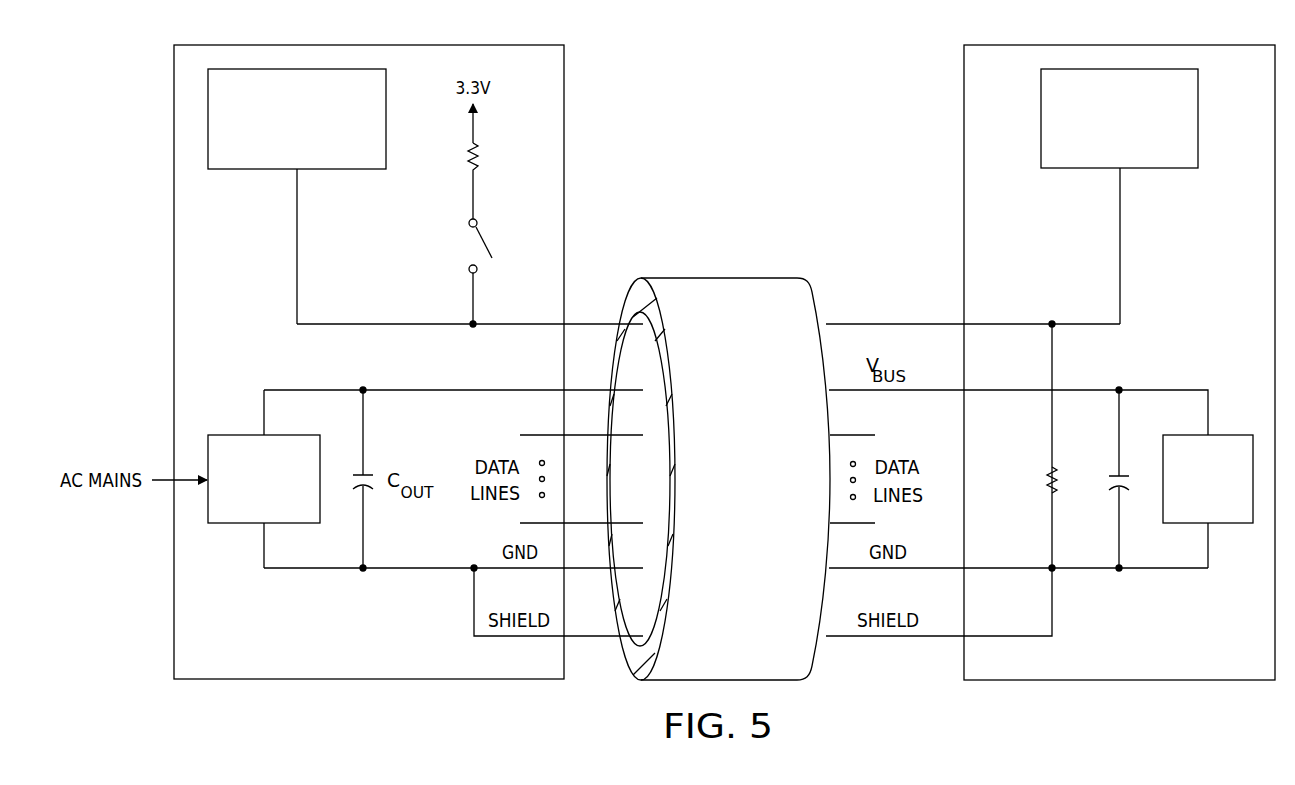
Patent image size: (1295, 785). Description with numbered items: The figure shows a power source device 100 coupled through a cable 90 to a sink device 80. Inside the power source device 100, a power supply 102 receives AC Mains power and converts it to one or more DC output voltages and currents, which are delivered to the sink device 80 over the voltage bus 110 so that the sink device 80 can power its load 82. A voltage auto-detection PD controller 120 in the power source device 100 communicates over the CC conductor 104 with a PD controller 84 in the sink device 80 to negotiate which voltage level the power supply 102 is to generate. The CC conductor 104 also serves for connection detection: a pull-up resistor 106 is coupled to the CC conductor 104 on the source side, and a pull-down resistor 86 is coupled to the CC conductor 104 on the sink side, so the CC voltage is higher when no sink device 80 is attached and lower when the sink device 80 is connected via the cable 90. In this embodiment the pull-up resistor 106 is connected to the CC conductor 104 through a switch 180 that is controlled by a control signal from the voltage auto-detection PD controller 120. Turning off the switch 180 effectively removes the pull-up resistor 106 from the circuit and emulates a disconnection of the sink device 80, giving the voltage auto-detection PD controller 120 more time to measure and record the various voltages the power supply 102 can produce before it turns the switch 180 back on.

The power source device 100 is at (372, 685).
The power supply 102 is at (243, 526).
The CC conductor 104 is at (385, 325).
The pull-up resistor 106 is at (466, 152).
The VBUS line 110 is at (441, 397).
The voltage auto-detection PD controller 120 is at (275, 170).
The switch 180 is at (490, 240).
The cable 90 is at (720, 278).
The sink device 80 is at (1144, 686).
The load 82 is at (1230, 525).
The PD controller 84 is at (1199, 118).
The pull-down resistor 86 is at (1046, 478).